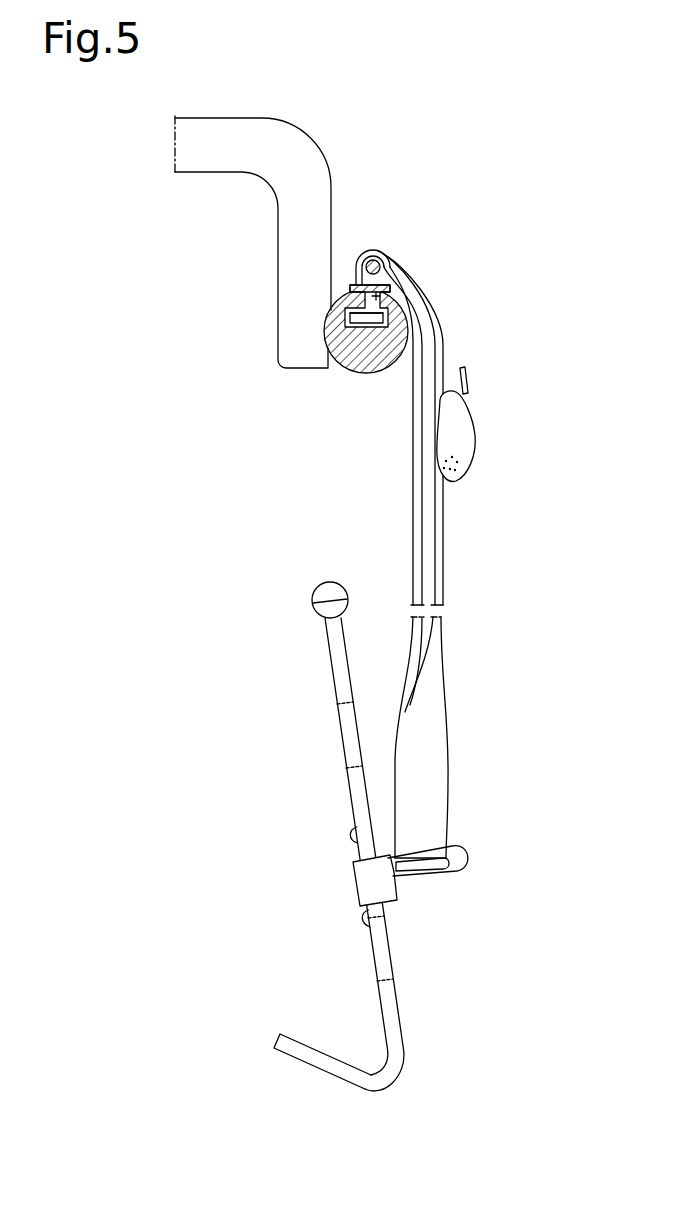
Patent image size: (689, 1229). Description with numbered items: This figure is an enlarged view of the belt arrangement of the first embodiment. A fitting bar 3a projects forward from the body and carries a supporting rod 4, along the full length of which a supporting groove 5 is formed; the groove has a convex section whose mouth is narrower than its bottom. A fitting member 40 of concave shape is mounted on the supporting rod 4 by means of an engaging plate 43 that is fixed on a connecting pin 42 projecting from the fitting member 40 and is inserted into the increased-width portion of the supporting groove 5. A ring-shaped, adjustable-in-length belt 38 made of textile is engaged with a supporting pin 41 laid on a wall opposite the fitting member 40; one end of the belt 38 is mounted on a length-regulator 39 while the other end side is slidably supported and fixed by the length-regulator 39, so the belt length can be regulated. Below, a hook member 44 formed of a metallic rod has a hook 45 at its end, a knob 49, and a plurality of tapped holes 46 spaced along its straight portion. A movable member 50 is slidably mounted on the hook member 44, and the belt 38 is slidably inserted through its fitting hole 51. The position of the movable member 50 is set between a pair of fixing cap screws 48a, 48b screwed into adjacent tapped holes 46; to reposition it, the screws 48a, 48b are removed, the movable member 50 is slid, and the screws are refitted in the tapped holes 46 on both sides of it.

The fitting bar 3a is at (287, 238).
The supporting rod 4 is at (327, 313).
The supporting groove 5 is at (327, 350).
The ring-shaped adjustable-in-length belt 38 is at (413, 418).
The length-regulator 39 is at (463, 420).
The fitting member 40 is at (372, 247).
The supporting pin 41 is at (383, 267).
The connecting pin 42 is at (390, 302).
The engaging plate 43 is at (370, 323).
The hook member 44 is at (390, 950).
The hook 45 is at (292, 1040).
The tapped holes 46 is at (338, 703).
The fixing cap screw 48a is at (347, 830).
The fixing cap screw 48b is at (360, 917).
The knob 49 is at (310, 593).
The movable member 50 is at (400, 882).
The fitting hole 51 is at (437, 878).